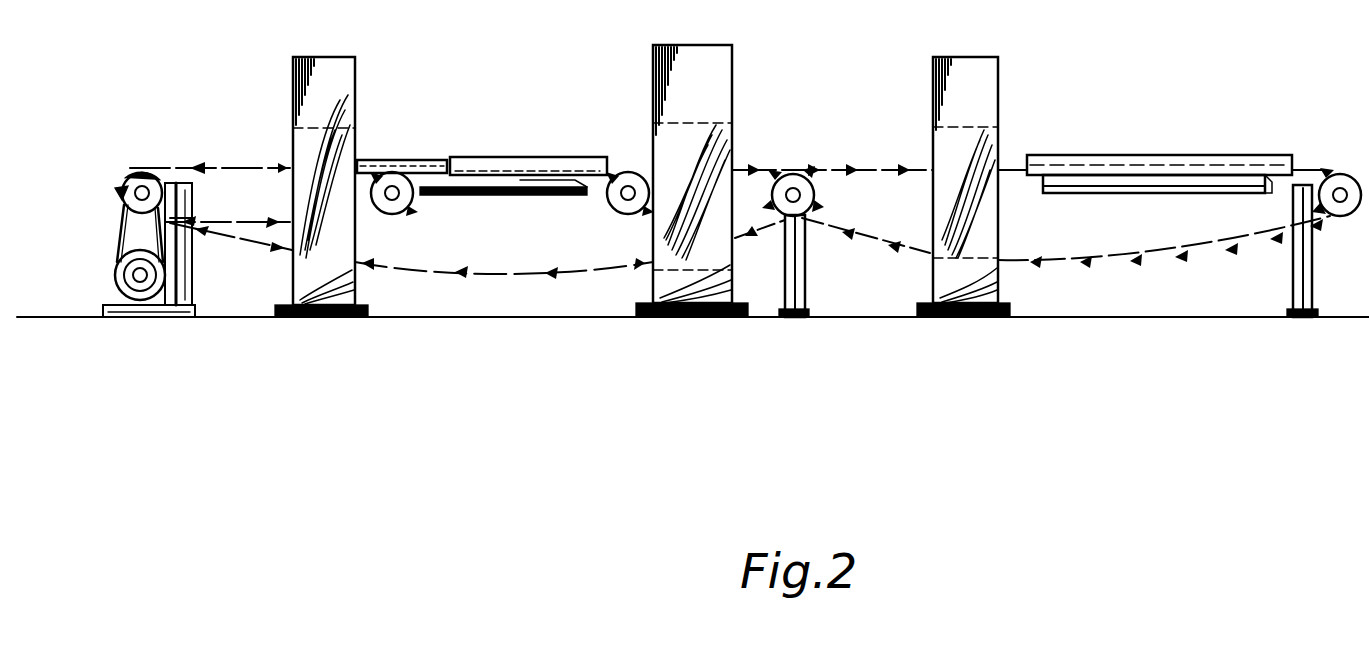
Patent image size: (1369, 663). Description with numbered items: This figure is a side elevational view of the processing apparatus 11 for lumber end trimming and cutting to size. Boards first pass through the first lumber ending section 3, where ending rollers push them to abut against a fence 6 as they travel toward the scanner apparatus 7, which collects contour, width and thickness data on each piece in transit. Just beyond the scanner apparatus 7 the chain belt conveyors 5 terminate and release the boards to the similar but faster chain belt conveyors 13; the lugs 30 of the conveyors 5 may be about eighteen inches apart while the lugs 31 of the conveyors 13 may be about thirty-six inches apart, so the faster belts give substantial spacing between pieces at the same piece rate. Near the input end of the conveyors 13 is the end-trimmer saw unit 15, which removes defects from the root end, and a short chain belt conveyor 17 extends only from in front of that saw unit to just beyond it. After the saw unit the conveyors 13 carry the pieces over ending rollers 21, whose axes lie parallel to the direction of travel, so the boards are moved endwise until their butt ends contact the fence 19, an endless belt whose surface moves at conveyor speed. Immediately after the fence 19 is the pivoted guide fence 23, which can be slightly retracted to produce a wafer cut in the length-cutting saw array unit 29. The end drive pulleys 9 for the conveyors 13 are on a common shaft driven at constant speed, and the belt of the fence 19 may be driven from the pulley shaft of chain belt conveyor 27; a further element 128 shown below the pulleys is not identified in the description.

The first lumber ending section 3 is at (1068, 158).
The chain belt conveyors 5 is at (1303, 168).
The fence 6 is at (1183, 154).
The scanner apparatus 7 is at (999, 83).
The end drive pulleys 9 is at (128, 186).
The processing apparatus 11 is at (652, 62).
The chain belt conveyors 13 is at (736, 170).
The end-trimmer saw unit 15 is at (733, 71).
The short chain belt conveyor 17 is at (618, 210).
The fence 19 is at (515, 158).
The ending rollers 21 is at (478, 198).
The pivoted guide fence 23 is at (396, 161).
The chain belt conveyor 27 is at (398, 210).
The length-cutting saw array unit 29 is at (356, 76).
The lugs 30 is at (906, 170).
The lugs 31 is at (190, 168).
The drive pulley 128 is at (117, 270).